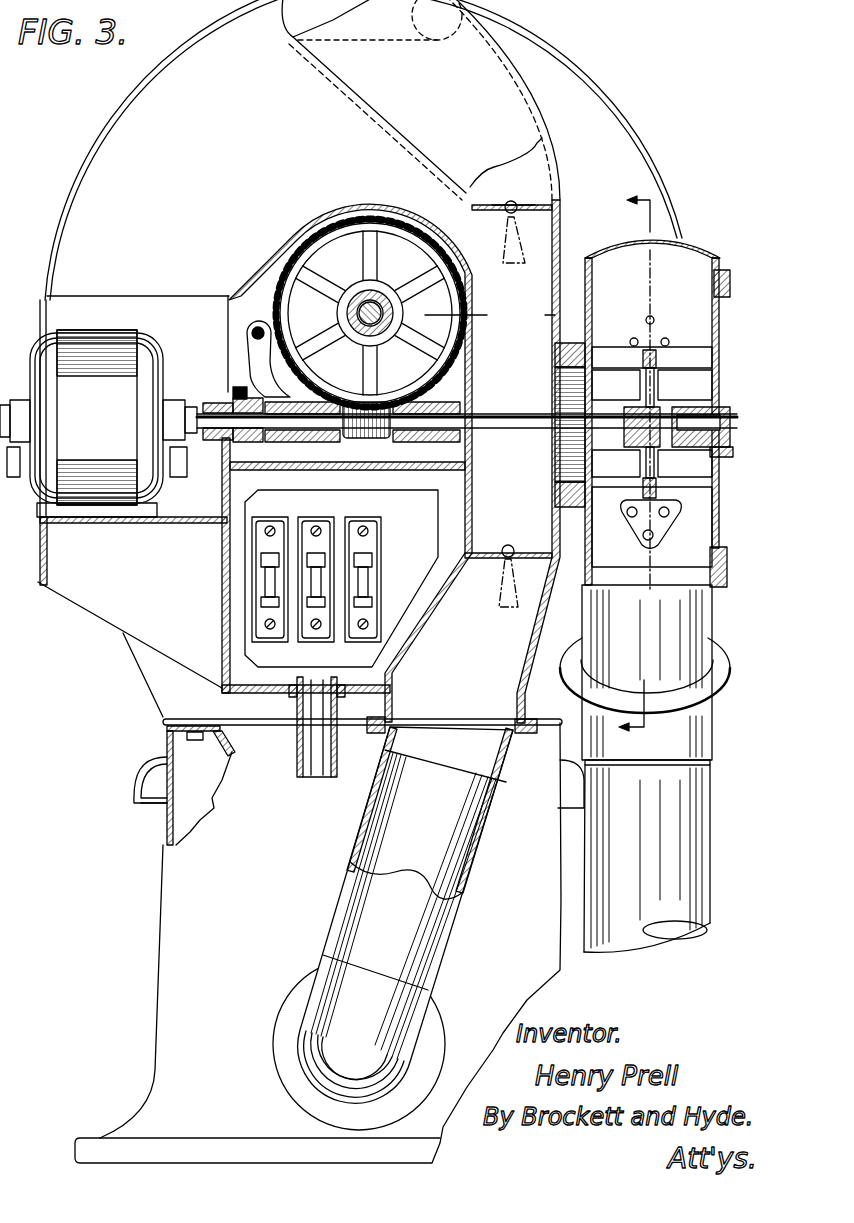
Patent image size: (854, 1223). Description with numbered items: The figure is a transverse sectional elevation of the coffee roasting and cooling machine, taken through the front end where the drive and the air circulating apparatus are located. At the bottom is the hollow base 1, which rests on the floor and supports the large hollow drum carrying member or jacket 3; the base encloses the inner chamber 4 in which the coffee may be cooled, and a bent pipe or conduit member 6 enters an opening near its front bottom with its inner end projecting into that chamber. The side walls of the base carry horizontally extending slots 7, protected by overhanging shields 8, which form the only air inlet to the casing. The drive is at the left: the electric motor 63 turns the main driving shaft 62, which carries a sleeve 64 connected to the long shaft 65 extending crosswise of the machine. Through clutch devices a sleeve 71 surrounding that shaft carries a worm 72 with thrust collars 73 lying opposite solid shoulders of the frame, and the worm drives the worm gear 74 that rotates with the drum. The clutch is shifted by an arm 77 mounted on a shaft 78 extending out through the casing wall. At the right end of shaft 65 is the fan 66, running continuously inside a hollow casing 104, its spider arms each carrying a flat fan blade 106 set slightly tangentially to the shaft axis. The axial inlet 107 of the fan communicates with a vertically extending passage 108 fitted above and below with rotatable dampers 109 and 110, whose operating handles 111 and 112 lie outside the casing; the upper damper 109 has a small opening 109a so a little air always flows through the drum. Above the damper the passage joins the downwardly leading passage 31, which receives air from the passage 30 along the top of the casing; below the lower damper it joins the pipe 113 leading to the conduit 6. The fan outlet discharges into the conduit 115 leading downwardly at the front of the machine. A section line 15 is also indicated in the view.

The hollow base 1 is at (318, 943).
The drum carrying member or jacket 3 is at (360, 388).
The inner chamber 4 is at (201, 785).
The bent pipe or conduit member 6 is at (395, 1029).
The slots or openings 7 is at (170, 784).
The overhanging shields 8 is at (160, 760).
The section line 15 is at (636, 470).
The conduit or passage 30 is at (291, 37).
The passage 31 is at (506, 163).
The main driving shaft 62 is at (200, 434).
The electric motor 63 is at (93, 423).
The sleeve 64 is at (232, 410).
The long shaft 65 is at (506, 427).
The fan 66 is at (694, 358).
The sleeve 71 is at (320, 452).
The worm 72 is at (413, 404).
The thrust collars 73 is at (410, 442).
The worm gear 74 is at (288, 295).
The arm 77 is at (262, 368).
The shaft 78 is at (254, 328).
The hollow casing 104 is at (721, 315).
The fan blade 106 is at (657, 531).
The axial inlet 107 is at (578, 452).
The vertically extending passage 108 is at (490, 318).
The rotatable damper 109 is at (549, 207).
The small opening 109a is at (535, 203).
The rotatable damper 110 is at (486, 560).
The operating handle 111 is at (521, 248).
The operating handle 112 is at (508, 607).
The pipe 113 is at (476, 866).
The conduit 115 is at (684, 811).